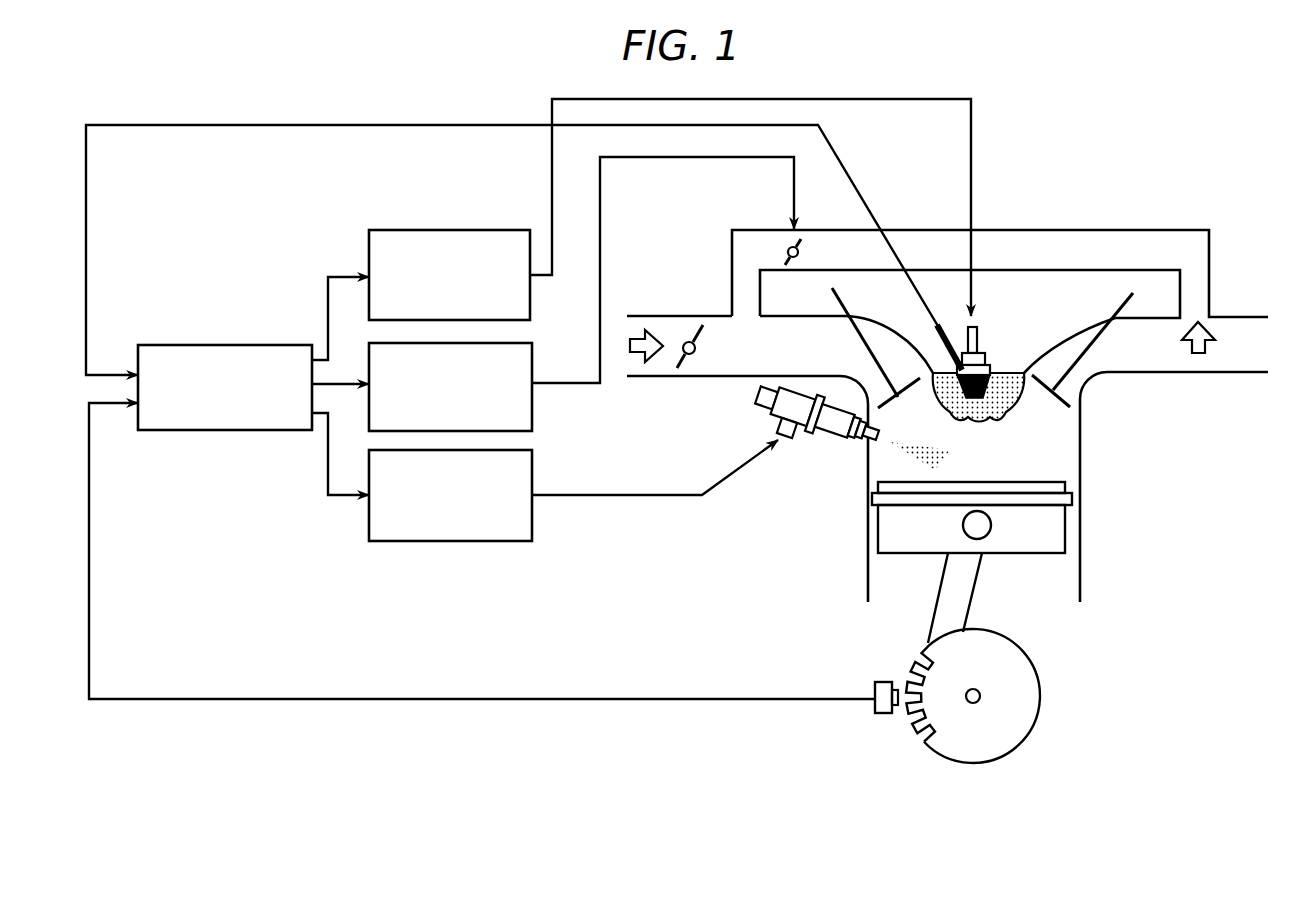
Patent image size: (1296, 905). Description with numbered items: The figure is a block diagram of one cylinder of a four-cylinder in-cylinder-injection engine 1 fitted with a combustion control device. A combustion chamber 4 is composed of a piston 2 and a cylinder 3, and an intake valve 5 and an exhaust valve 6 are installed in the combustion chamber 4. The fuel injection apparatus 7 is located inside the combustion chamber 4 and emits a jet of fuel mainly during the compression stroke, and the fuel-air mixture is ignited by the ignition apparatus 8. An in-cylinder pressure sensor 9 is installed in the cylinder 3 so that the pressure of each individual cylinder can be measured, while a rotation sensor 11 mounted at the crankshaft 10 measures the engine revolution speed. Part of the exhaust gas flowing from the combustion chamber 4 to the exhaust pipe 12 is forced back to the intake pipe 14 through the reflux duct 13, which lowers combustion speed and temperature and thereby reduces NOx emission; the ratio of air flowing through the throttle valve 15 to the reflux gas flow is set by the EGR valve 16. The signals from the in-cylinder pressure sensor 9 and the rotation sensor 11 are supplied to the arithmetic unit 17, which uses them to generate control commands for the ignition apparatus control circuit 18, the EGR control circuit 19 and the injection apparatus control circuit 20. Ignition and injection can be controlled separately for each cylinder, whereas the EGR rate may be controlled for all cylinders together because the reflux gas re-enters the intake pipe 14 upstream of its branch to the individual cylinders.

The engine 1 is at (1087, 537).
The piston 2 is at (1020, 555).
The cylinder 3 is at (1010, 372).
The combustion chamber 4 is at (1060, 437).
The intake valve 5 is at (832, 295).
The exhaust valve 6 is at (1112, 310).
The fuel injection apparatus 7 is at (815, 436).
The ignition apparatus 8 is at (985, 335).
The in-cylinder pressure sensor 9 is at (930, 328).
The crankshaft 10 is at (993, 690).
The rotation sensor 11 is at (870, 710).
The exhaust pipe 12 is at (1210, 375).
The reflux duct 13 is at (1045, 228).
The intake pipe 14 is at (715, 380).
The throttle valve 15 is at (680, 314).
The EGR valve 16 is at (790, 248).
The arithmetic unit 17 is at (215, 432).
The ignition apparatus control circuit 18 is at (445, 228).
The EGR control circuit 19 is at (532, 408).
The injection apparatus control circuit 20 is at (532, 520).